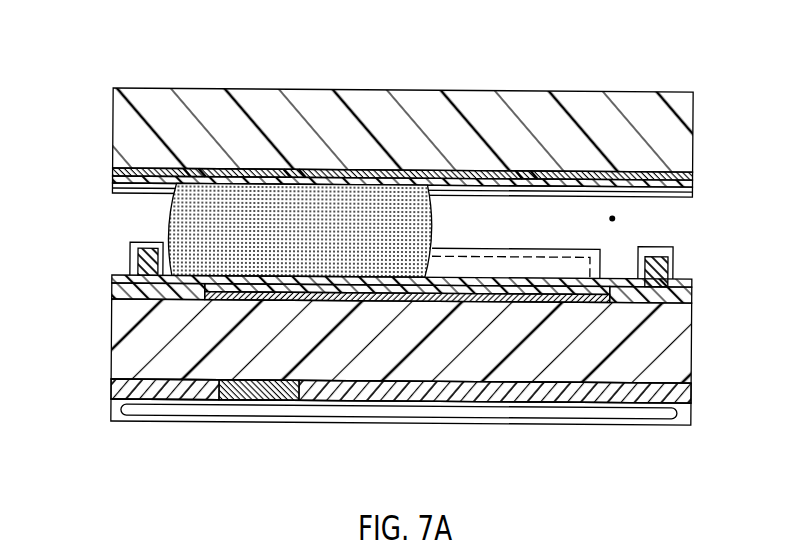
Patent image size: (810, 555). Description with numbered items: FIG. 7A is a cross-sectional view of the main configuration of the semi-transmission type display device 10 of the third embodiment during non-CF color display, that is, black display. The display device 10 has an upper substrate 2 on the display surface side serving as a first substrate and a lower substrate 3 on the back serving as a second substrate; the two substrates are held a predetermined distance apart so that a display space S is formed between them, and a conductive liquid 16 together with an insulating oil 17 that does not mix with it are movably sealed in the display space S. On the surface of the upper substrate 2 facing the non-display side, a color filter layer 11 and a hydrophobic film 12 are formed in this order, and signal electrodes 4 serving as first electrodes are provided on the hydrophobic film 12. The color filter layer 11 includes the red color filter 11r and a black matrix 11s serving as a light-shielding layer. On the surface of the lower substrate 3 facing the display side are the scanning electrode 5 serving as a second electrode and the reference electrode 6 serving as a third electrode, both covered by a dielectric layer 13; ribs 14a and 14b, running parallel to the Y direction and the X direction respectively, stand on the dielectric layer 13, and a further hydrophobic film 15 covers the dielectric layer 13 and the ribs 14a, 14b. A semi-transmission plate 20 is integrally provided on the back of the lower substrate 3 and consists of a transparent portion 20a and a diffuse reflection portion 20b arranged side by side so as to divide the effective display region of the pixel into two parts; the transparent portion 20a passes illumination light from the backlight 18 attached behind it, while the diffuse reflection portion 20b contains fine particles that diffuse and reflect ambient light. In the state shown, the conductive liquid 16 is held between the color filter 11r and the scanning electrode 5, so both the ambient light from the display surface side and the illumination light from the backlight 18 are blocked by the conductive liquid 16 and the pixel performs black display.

The upper substrate 2 is at (127, 128).
The lower substrate 3 is at (113, 340).
The signal electrode 4 is at (693, 189).
The scanning electrode 5 is at (305, 300).
The reference electrode 6 is at (517, 300).
The display device 10 is at (686, 75).
The color filter layer 11 is at (437, 158).
The black matrix 11s is at (187, 168).
The red color filter 11r is at (289, 168).
The hydrophobic film 12 is at (693, 180).
The dielectric layer 13 is at (686, 297).
The rib 14a is at (150, 266).
The rib 14b is at (468, 258).
The hydrophobic film 15 is at (146, 244).
The conductive liquid 16 is at (178, 218).
The insulating oil 17 is at (478, 216).
The backlight 18 is at (633, 414).
The semi-transmission plate 20 is at (700, 390).
The transparent portion 20a is at (152, 392).
The diffuse reflection portion 20b is at (252, 399).
The display space S is at (612, 213).